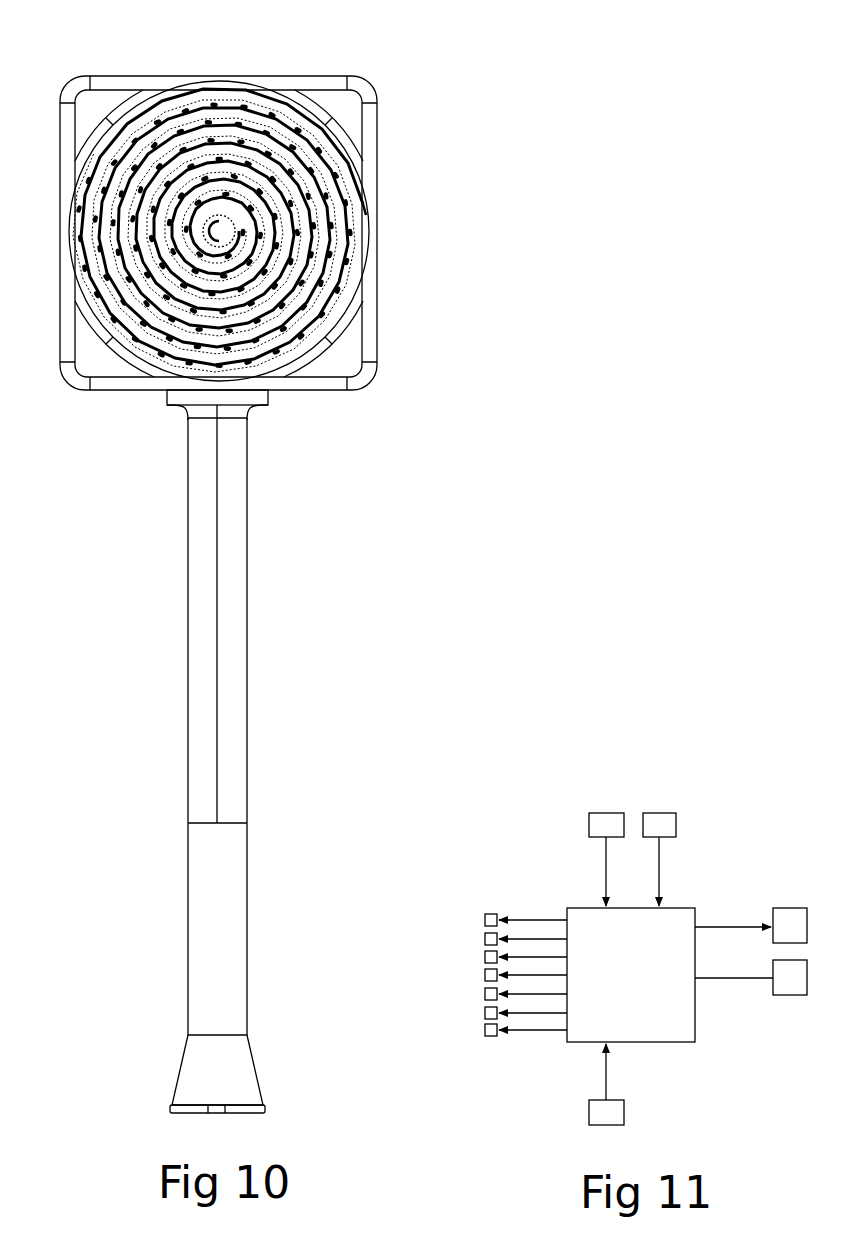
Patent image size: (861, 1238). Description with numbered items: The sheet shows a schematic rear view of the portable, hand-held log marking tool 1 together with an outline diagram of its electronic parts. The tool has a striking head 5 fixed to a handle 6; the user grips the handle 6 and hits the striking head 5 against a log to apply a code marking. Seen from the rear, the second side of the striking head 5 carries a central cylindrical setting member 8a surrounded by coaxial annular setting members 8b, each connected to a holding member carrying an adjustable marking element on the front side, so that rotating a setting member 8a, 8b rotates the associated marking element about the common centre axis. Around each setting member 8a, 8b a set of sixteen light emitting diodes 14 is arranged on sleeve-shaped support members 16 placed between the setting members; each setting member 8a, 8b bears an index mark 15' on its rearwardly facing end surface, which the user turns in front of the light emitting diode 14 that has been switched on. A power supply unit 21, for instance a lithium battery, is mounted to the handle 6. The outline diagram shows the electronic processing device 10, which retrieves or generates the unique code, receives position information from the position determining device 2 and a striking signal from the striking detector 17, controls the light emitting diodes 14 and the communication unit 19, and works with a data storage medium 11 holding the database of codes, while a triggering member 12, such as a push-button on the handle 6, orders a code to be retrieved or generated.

In FIG. 10, the log marking tool 1 is at (400, 269).
In FIG. 10, the striking head 5 is at (113, 392).
In FIG. 10, the handle 6 is at (238, 585).
In FIG. 10, the cylindrical setting member 8a is at (222, 220).
In FIG. 10, the annular setting member 8b is at (137, 128).
In FIG. 10, the light emitting diode 14 is at (252, 222).
In FIG. 11, the light emitting diode 14 is at (489, 912).
In FIG. 10, the index mark 15' is at (191, 198).
In FIG. 10, the sleeve-shaped support member 16 is at (258, 207).
In FIG. 10, the power supply unit 21 is at (247, 1068).
In FIG. 11, the electronic processing device 10 is at (670, 1032).
In FIG. 11, the position determining device 2 is at (606, 818).
In FIG. 11, the striking detector 17 is at (660, 818).
In FIG. 11, the communication unit 19 is at (789, 915).
In FIG. 11, the data storage medium 11 is at (790, 988).
In FIG. 11, the triggering member 12 is at (615, 1117).